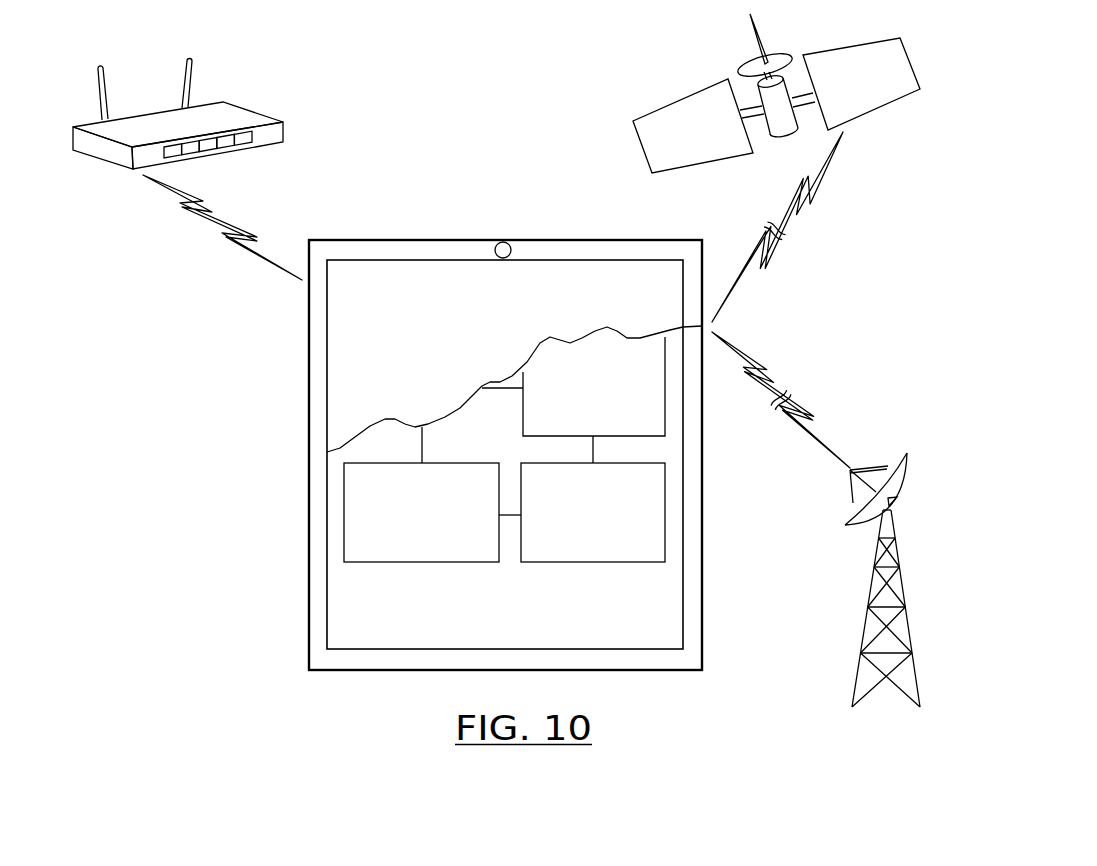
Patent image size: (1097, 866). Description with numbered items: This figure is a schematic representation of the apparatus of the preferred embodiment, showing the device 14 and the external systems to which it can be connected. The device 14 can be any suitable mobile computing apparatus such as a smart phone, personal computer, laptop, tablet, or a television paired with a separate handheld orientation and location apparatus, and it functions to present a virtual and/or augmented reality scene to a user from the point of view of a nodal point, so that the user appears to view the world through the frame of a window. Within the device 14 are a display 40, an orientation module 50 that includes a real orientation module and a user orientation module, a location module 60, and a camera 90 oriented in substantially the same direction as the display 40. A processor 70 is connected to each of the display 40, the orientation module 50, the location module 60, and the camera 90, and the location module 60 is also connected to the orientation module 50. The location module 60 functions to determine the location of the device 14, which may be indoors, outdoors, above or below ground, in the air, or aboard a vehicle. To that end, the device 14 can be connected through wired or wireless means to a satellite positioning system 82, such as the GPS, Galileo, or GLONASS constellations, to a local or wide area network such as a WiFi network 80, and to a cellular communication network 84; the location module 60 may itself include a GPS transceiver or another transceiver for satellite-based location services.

The device 14 is at (308, 358).
The display 40 is at (411, 338).
The orientation module 50 is at (344, 537).
The location module 60 is at (665, 515).
The processor 70 is at (665, 412).
The WiFi network 80 is at (284, 128).
The satellite positioning system 82 is at (873, 113).
The cellular communication network 84 is at (897, 463).
The camera 90 is at (504, 242).